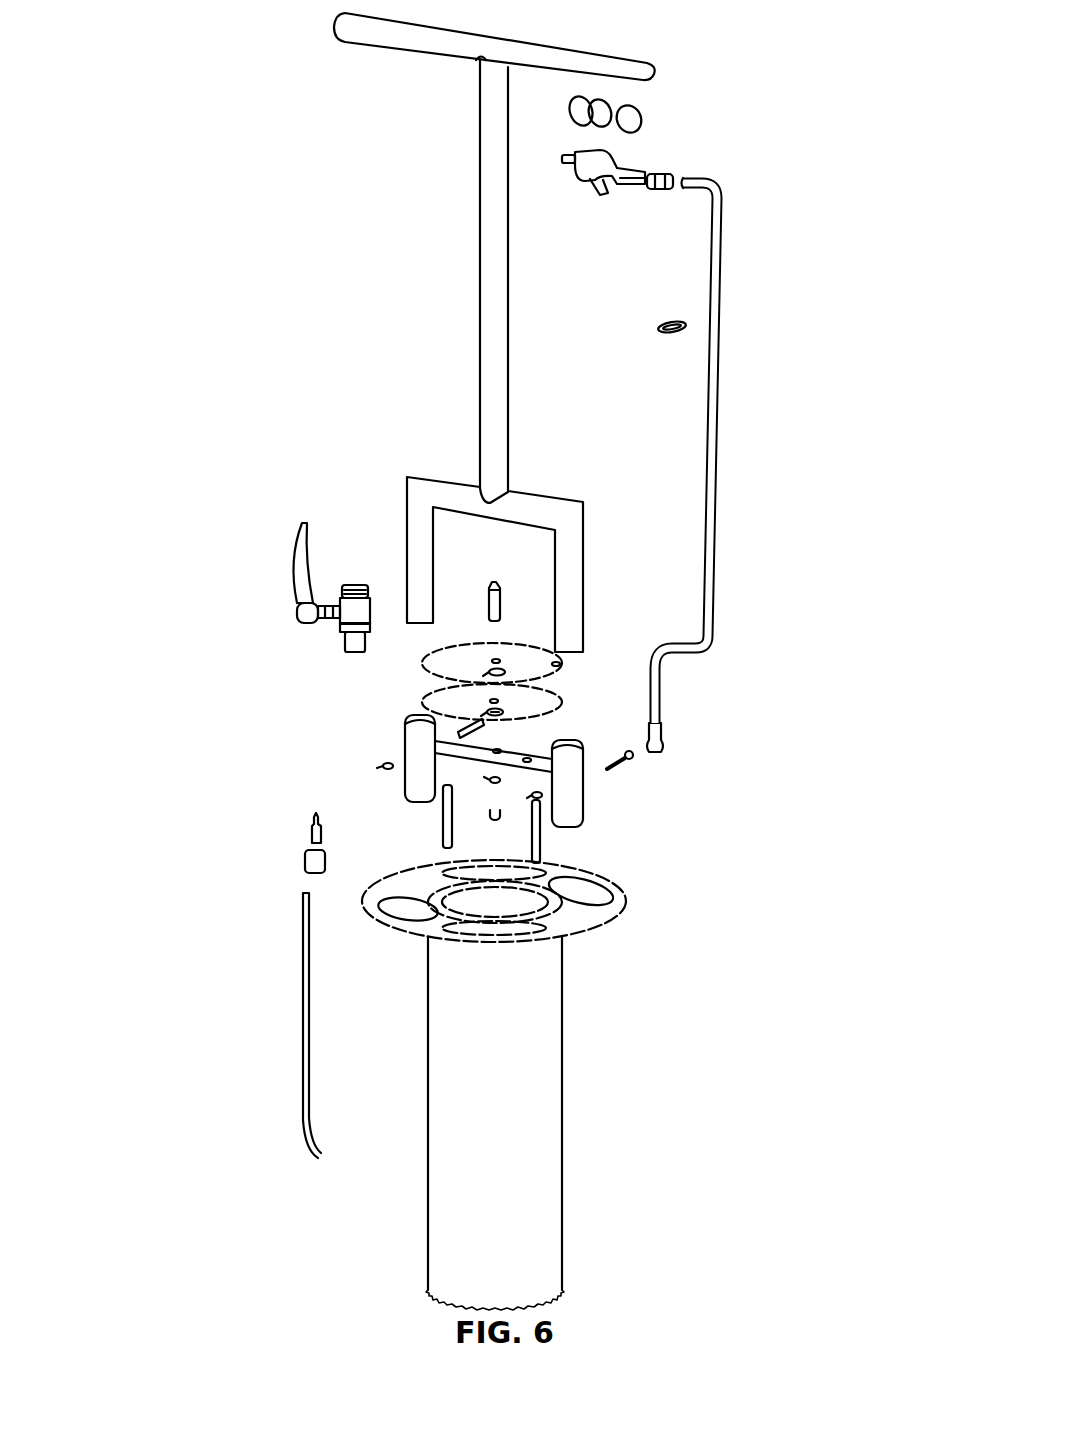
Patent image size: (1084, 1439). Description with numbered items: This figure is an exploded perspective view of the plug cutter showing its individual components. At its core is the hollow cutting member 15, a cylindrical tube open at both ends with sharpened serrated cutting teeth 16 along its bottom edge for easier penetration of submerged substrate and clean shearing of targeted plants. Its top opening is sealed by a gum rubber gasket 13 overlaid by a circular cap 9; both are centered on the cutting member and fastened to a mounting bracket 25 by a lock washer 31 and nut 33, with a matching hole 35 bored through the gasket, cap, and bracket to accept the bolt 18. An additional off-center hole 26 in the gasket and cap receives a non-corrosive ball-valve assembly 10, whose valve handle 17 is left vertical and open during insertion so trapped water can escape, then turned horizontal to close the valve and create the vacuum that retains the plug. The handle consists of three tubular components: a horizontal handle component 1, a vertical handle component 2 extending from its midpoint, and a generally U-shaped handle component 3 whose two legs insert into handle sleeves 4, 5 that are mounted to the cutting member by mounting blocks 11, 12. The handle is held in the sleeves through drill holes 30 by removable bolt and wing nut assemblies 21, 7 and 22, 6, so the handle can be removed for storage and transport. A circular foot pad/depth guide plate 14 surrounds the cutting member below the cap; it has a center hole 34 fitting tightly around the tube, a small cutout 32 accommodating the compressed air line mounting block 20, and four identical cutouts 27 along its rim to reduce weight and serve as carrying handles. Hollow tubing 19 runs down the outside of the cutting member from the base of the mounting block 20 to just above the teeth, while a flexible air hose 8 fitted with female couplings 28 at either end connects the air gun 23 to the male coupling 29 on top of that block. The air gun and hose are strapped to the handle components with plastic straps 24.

The handle component 1 is at (434, 44).
The handle component 2 is at (488, 322).
The U-shaped handle component 3 is at (416, 484).
The handle sleeve 4 is at (580, 768).
The handle sleeve 5 is at (410, 715).
The wing nut 6 is at (538, 793).
The wing nut 7 is at (383, 770).
The flexible air hose 8 is at (710, 508).
The cap 9 is at (555, 703).
The ball-valve assembly 10 is at (353, 610).
The mounting block 11 is at (442, 838).
The mounting block 12 is at (537, 822).
The gasket 13 is at (530, 752).
The foot pad/depth guide plate 14 is at (588, 932).
The hollow cutting member 15 is at (550, 965).
The serrated cutting teeth 16 is at (498, 1307).
The valve handle 17 is at (300, 540).
The bolt 18 is at (490, 583).
The hollow tubing 19 is at (303, 1000).
The compressed air line mounting block 20 is at (308, 868).
The bolt 21 is at (465, 727).
The bolt 22 is at (620, 762).
The air gun 23 is at (615, 165).
The plastic strap 24 is at (639, 108).
The mounting bracket 25 is at (527, 757).
The hole 26 is at (487, 710).
The cutout 27 is at (405, 903).
The female coupling 28 is at (663, 182).
The male coupling 29 is at (313, 830).
The drill hole 30 is at (486, 759).
The lock washer 31 is at (493, 822).
The cutout 32 is at (440, 883).
The nut 33 is at (492, 779).
The hole 34 is at (435, 902).
The hole 35 is at (495, 750).